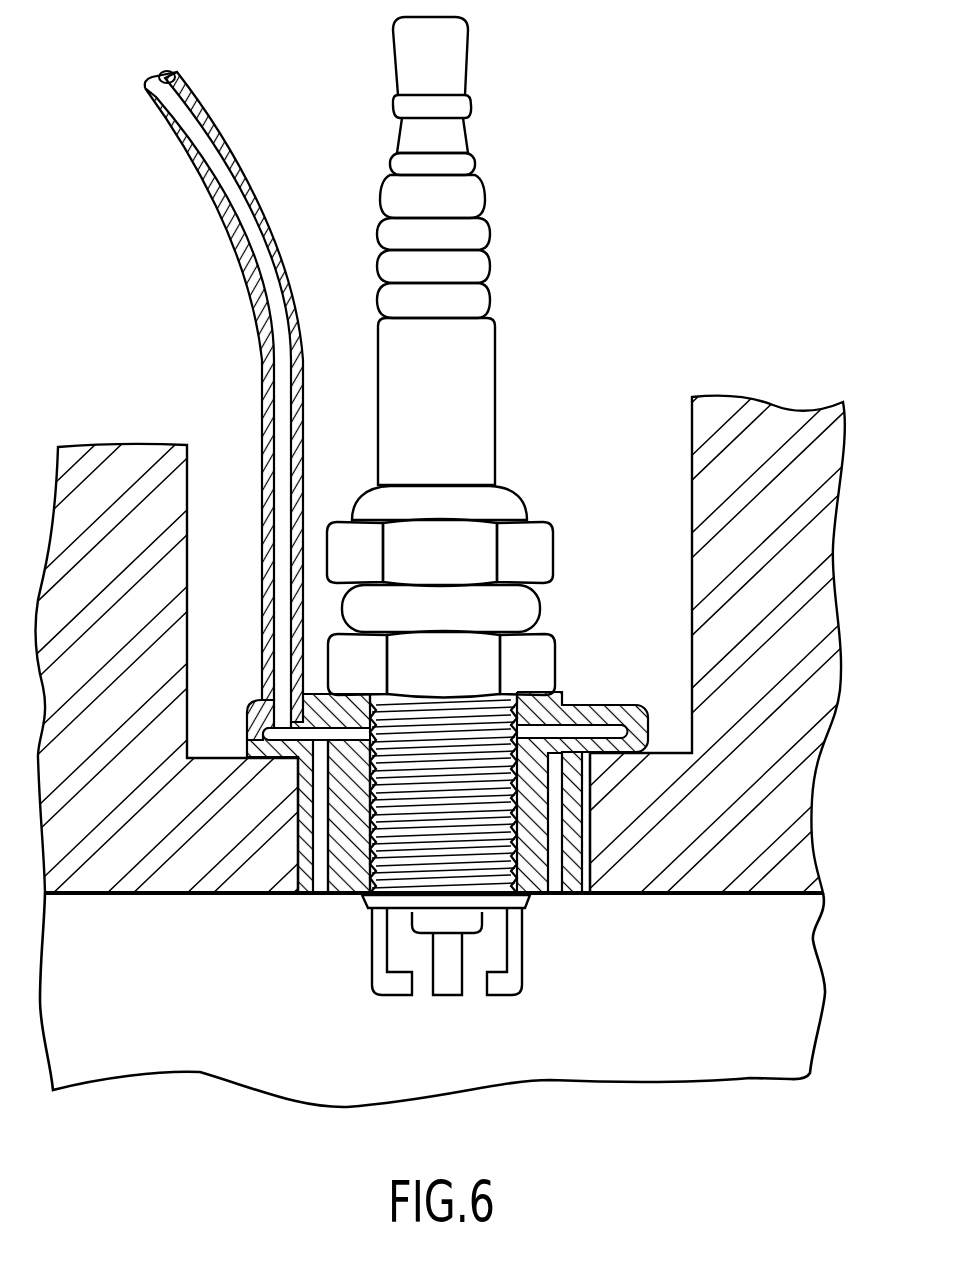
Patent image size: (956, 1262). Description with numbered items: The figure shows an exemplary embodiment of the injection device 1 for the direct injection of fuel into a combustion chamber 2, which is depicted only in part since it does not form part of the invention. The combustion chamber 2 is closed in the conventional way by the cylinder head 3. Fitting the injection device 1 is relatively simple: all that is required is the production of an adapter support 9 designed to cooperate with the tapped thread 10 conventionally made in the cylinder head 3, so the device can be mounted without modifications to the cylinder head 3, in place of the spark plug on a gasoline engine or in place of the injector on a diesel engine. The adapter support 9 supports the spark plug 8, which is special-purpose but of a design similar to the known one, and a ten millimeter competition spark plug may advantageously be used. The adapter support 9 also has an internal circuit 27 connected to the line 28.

The injection device 1 is at (556, 436).
The combustion chamber 2 is at (767, 978).
The cylinder head 3 is at (797, 797).
The spark plug 8 is at (475, 377).
The adapter support 9 is at (591, 706).
The tapped thread 10 is at (583, 860).
The internal circuit 27 is at (337, 880).
The line 28 is at (237, 200).